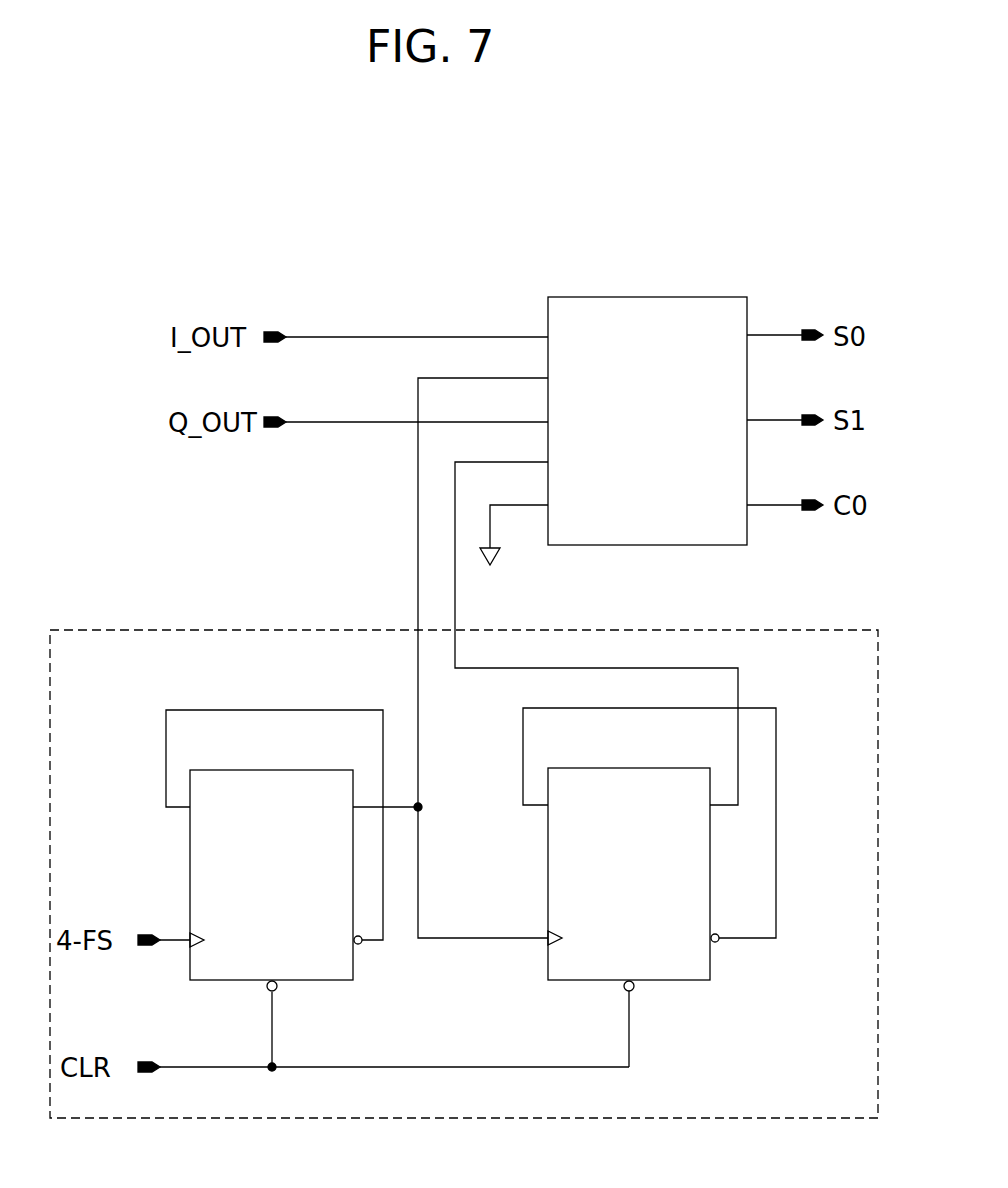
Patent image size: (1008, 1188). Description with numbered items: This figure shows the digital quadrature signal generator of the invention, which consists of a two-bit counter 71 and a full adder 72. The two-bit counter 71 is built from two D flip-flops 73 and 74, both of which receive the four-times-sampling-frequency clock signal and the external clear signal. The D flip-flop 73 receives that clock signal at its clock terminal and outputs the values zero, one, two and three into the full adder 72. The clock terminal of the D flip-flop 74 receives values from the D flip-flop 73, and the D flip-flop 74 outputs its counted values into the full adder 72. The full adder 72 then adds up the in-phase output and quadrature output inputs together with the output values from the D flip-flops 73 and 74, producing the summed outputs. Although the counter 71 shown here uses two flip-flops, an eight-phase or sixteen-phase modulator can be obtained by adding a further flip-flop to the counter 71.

The 2-bit counter 71 is at (650, 630).
The full adder 72 is at (656, 297).
The D flip-flop 73 is at (256, 770).
The D flip-flop 74 is at (612, 768).